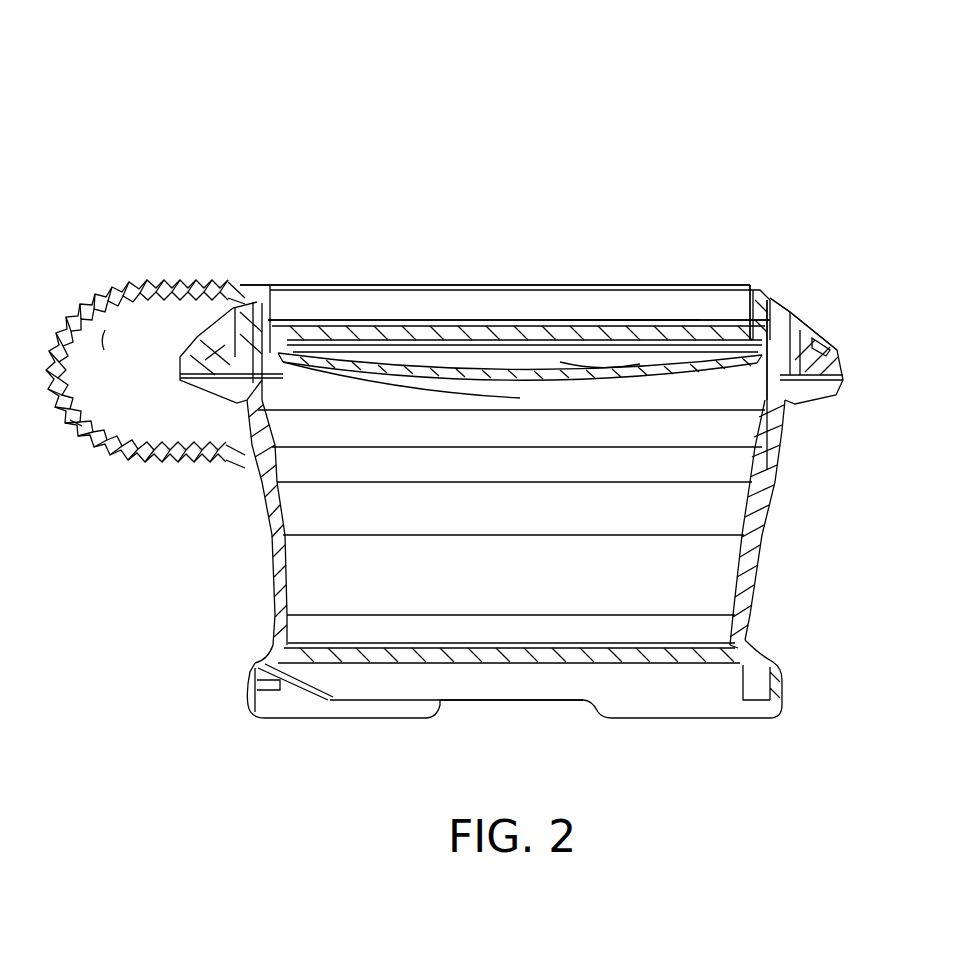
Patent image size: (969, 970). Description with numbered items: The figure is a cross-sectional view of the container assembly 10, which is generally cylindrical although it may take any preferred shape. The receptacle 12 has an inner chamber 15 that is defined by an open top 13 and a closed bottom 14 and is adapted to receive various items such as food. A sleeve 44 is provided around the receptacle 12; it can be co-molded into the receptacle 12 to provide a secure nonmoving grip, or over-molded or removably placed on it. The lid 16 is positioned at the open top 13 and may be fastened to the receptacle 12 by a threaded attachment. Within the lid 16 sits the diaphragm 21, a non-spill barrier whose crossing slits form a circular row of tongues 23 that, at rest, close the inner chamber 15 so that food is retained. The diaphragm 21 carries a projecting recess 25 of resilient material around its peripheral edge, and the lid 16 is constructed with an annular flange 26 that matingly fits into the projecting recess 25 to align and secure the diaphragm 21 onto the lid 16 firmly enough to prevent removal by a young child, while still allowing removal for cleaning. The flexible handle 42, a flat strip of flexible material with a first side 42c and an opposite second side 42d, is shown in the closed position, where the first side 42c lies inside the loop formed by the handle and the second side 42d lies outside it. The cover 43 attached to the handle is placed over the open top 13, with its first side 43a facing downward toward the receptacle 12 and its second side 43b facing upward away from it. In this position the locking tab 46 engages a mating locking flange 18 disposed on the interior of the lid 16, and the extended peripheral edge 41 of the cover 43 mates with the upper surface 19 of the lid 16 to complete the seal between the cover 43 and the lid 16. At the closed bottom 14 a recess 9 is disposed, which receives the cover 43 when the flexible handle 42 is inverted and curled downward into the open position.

The container assembly 10 is at (292, 104).
The flexible handle 42 is at (100, 286).
The first side 42c is at (108, 337).
The second side 42d is at (76, 423).
The annular flange 26 is at (240, 305).
The lid 16 is at (278, 303).
The projecting recess 25 is at (303, 310).
The cover 43 is at (548, 300).
The second side of cover 43b is at (607, 322).
The first side of cover 43a is at (578, 345).
The tongues 23 is at (450, 392).
The diaphragm 21 is at (400, 378).
The receptacle 12 is at (757, 527).
The inner chamber 15 is at (303, 508).
The sleeve 44 is at (786, 442).
The open top 13 is at (793, 407).
The extended peripheral edge 41 is at (757, 300).
The upper surface 19 is at (768, 300).
The locking flange 18 is at (772, 318).
The locking tab 46 is at (790, 322).
The closed bottom 14 is at (753, 640).
The recess 9 is at (745, 685).